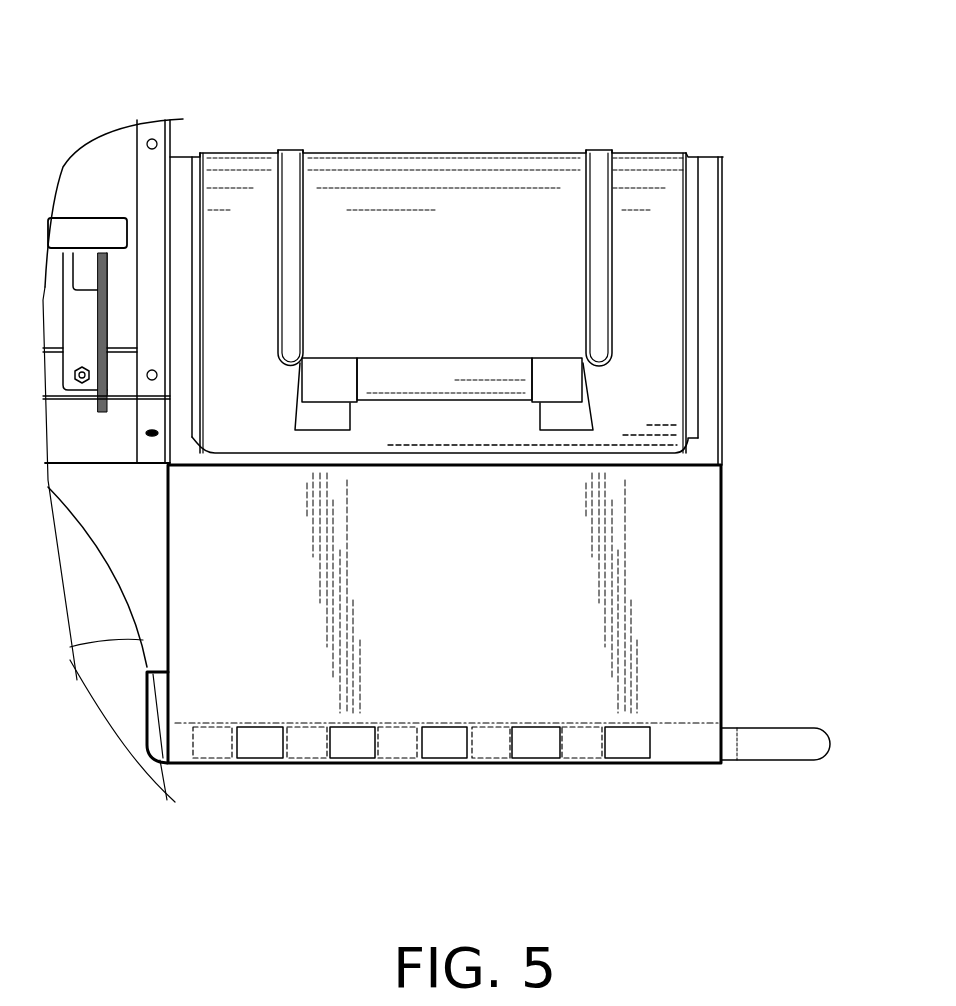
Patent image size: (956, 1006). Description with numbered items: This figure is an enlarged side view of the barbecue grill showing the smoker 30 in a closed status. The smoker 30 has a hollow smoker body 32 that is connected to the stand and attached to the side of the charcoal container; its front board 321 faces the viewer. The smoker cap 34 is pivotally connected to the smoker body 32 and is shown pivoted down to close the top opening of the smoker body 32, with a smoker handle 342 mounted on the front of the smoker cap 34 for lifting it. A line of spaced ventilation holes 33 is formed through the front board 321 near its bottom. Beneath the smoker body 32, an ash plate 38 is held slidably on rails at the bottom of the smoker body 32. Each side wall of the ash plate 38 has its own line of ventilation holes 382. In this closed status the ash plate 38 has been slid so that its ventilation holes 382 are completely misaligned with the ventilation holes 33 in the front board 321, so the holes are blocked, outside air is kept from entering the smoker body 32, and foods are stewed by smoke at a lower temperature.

The smoker 30 is at (561, 105).
The smoker cap 34 is at (385, 193).
The smoker handle 342 is at (432, 378).
The smoker body 32 is at (683, 565).
The front board 321 is at (655, 638).
The ventilation holes 33 is at (533, 744).
The ventilation holes 382 is at (583, 745).
The ash plate 38 is at (693, 740).